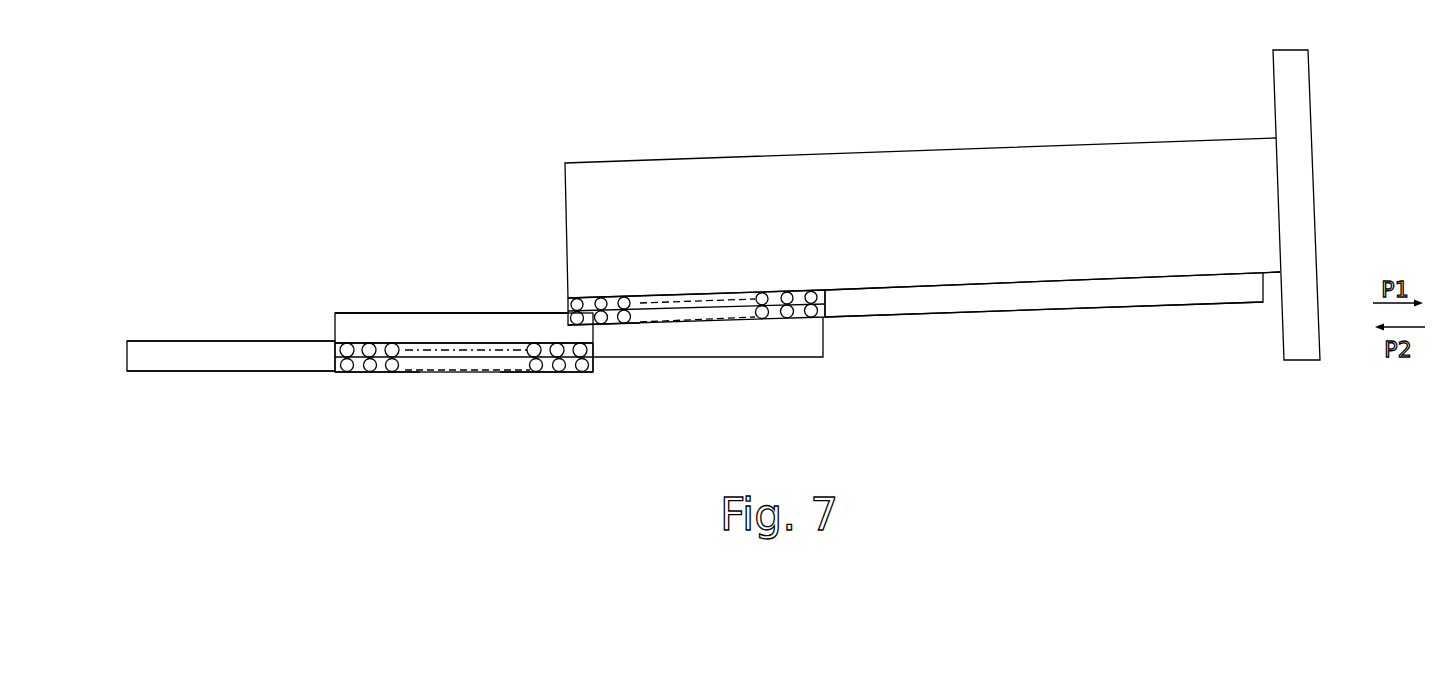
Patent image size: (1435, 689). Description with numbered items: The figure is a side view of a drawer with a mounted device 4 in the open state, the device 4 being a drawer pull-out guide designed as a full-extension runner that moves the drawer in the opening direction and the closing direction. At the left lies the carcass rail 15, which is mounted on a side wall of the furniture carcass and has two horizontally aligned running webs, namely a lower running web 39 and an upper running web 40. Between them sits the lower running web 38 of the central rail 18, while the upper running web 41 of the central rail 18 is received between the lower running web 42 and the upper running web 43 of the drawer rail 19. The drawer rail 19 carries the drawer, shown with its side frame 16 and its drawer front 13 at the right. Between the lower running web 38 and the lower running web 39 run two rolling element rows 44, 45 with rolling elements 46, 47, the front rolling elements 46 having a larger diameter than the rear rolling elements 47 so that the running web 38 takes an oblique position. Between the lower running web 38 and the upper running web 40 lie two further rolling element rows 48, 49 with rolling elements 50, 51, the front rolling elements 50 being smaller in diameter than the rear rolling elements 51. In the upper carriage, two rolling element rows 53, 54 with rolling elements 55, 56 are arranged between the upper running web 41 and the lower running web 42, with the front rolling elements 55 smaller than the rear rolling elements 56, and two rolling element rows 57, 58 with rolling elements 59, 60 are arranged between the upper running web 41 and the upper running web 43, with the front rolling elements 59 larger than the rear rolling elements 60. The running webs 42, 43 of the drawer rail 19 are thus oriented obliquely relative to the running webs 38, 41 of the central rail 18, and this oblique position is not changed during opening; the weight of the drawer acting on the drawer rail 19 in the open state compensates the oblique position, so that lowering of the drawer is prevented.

The device 4 is at (1110, 374).
The drawer front 13 is at (1297, 93).
The carcass rail 15 is at (128, 361).
The side frame 16 is at (1050, 250).
The central rail 18 is at (333, 327).
The drawer rail 19 is at (562, 297).
The lower running web 38 is at (690, 357).
The lower running web 39 is at (250, 372).
The upper running web 40 is at (178, 341).
The upper running web 41 is at (428, 312).
The lower running web 42 is at (878, 318).
The upper running web 43 is at (900, 287).
The rolling element row 44 is at (553, 379).
The rolling element row 45 is at (372, 376).
The rolling elements 46 is at (585, 375).
The rolling elements 47 is at (398, 368).
The rolling element row 48 is at (546, 333).
The rolling element row 49 is at (373, 336).
The rolling elements 50 is at (532, 342).
The rolling elements 51 is at (348, 342).
The rolling element row 53 is at (787, 335).
The rolling element row 54 is at (608, 358).
The rolling elements 55 is at (823, 322).
The rolling elements 56 is at (626, 354).
The rolling element row 57 is at (790, 288).
The rolling element row 58 is at (604, 289).
The rolling elements 59 is at (812, 291).
The rolling elements 60 is at (625, 291).